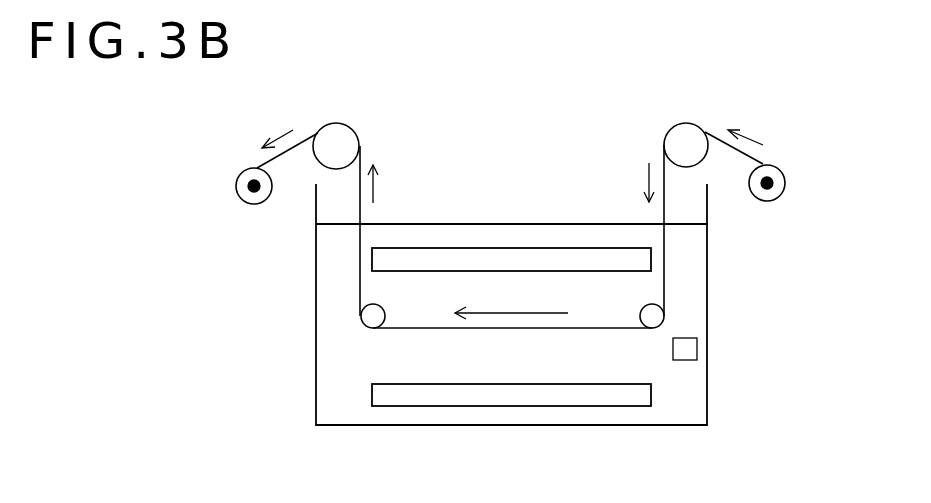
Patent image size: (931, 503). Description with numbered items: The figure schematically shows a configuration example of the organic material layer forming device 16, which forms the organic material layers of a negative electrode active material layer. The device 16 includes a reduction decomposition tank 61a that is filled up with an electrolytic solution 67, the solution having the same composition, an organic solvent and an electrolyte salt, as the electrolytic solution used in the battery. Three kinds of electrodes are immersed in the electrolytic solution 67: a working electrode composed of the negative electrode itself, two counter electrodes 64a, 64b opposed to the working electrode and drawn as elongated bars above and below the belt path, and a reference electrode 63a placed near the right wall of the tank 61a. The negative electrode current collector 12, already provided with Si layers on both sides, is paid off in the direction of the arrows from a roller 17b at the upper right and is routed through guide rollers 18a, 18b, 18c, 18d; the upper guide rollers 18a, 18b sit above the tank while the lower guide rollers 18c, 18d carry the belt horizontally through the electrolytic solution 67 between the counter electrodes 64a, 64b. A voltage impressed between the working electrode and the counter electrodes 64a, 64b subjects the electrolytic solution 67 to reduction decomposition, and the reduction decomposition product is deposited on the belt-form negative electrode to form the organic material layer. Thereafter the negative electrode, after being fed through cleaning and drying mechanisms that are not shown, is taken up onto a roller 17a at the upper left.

The organic material layer forming device 16 is at (515, 133).
The negative electrode current collector 12 is at (410, 330).
The roller 17a is at (240, 187).
The roller 17b is at (784, 186).
The guide roller 18a is at (348, 138).
The guide roller 18b is at (672, 138).
The guide roller 18c is at (365, 320).
The guide roller 18d is at (655, 318).
The reduction decomposition tank 61a is at (707, 214).
The electrolytic solution 67 is at (692, 274).
The counter electrode 64a is at (510, 255).
The counter electrode 64b is at (510, 410).
The reference electrode 63a is at (697, 348).